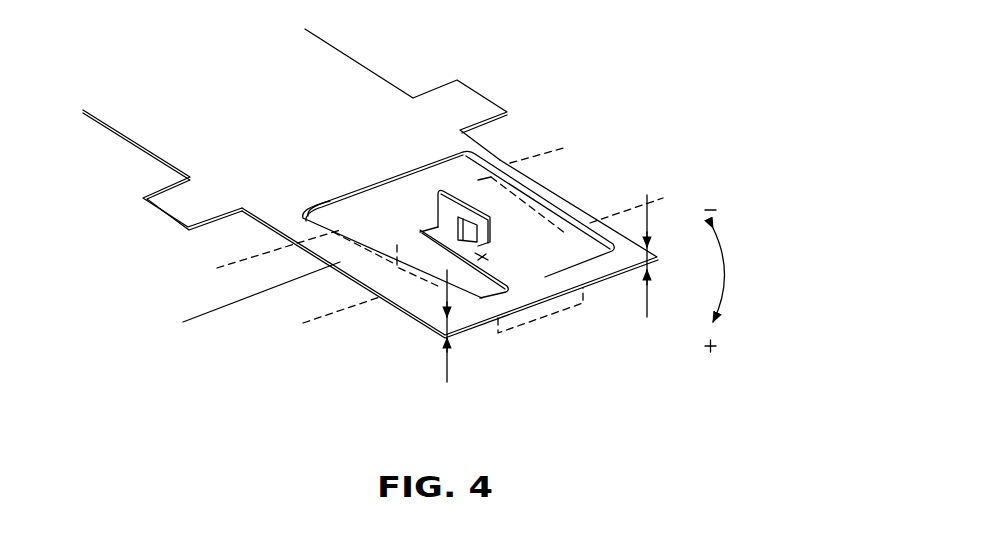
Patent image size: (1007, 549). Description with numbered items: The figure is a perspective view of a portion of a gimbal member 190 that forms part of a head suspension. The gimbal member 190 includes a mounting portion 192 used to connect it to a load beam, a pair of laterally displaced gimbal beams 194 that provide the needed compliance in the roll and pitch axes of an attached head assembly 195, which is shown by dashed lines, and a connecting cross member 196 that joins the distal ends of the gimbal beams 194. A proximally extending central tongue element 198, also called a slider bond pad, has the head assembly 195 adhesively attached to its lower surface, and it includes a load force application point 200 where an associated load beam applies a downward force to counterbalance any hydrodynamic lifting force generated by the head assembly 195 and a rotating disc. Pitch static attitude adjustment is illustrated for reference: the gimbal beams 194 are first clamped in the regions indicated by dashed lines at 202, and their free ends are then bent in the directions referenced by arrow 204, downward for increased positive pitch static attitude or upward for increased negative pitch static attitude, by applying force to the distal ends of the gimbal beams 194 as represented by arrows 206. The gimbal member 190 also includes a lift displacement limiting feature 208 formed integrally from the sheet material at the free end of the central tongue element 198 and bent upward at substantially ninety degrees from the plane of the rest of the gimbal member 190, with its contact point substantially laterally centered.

The gimbal member 190 is at (549, 78).
The mounting portion 192 is at (264, 99).
The gimbal beams 194 is at (560, 187).
The head assembly 195 is at (538, 320).
The connecting cross member 196 is at (484, 310).
The central tongue element 198 is at (322, 188).
The load force application point 200 is at (348, 199).
The clamping regions 202 is at (575, 143).
The bending direction arrow 204 is at (723, 275).
The force application arrows 206 is at (650, 219).
The lift displacement limiting feature 208 is at (473, 217).